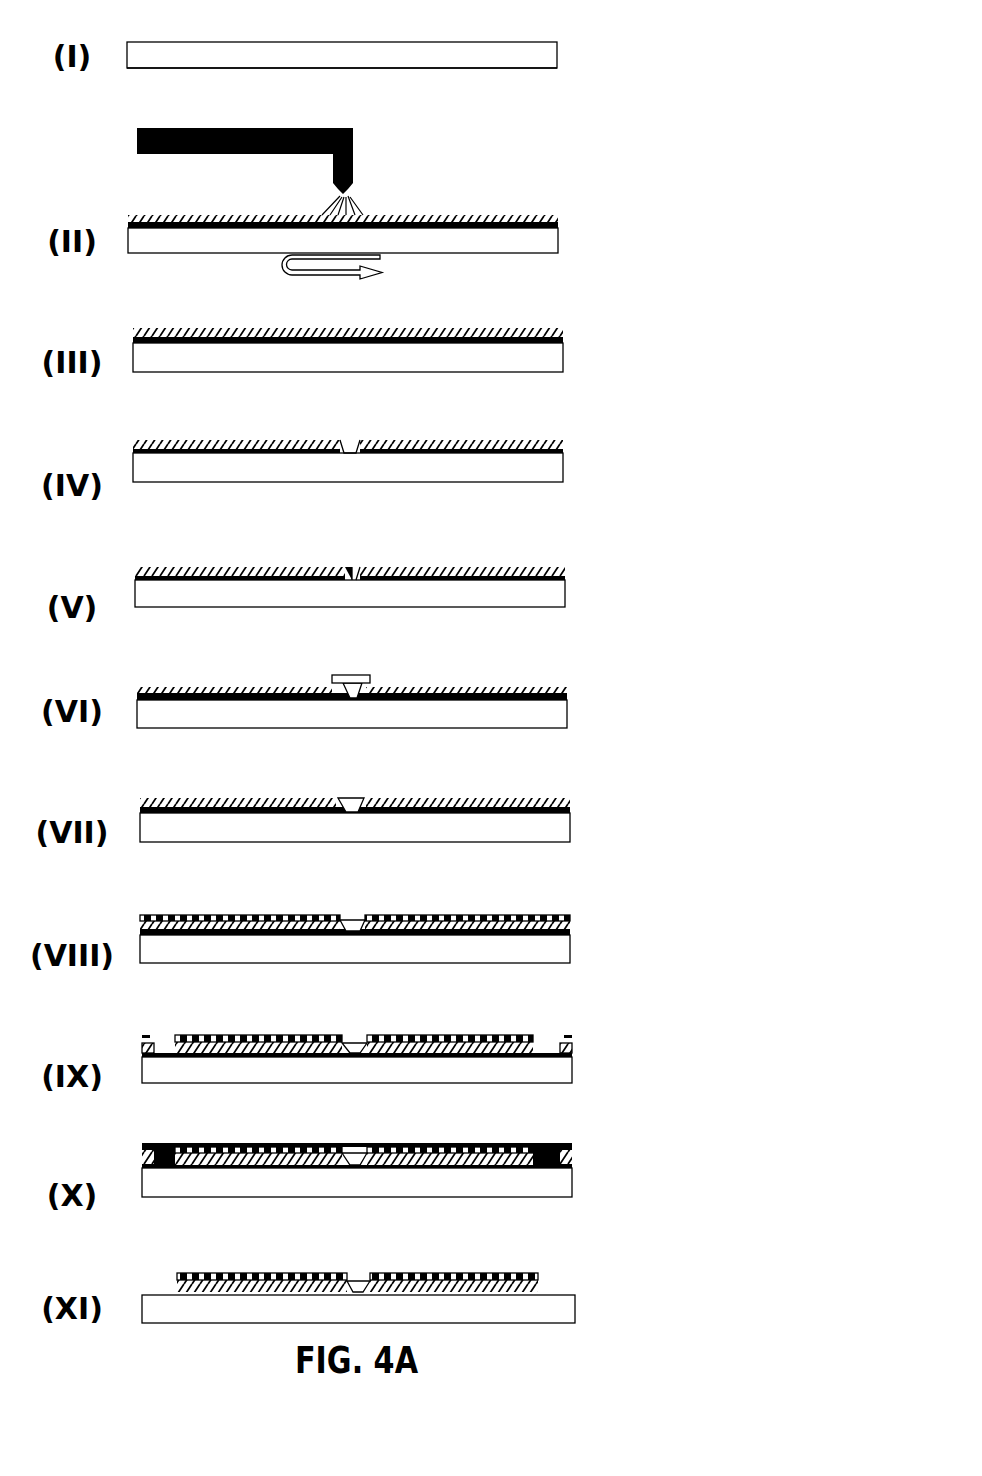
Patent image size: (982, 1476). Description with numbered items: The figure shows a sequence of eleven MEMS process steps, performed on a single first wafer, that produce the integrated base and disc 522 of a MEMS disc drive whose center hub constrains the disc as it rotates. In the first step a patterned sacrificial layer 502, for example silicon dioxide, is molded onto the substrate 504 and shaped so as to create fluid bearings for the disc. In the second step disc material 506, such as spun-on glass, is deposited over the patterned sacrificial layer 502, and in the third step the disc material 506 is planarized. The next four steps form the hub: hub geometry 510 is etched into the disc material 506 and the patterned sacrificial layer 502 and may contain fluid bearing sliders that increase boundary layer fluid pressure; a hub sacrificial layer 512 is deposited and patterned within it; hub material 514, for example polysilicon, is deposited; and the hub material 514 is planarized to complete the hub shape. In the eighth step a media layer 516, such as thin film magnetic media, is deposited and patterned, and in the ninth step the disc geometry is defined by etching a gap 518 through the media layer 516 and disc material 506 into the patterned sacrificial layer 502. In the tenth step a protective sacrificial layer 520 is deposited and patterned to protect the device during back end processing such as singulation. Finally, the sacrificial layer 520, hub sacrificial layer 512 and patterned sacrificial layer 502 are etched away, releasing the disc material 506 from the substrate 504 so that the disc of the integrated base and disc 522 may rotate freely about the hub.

The patterned sacrificial layer 502 is at (397, 40).
The substrate 504 is at (547, 60).
The disc material 506 is at (352, 212).
The hub geometry 510 is at (348, 448).
The hub sacrificial layer 512 is at (352, 577).
The hub material 514 is at (356, 676).
The media layer 516 is at (420, 915).
The gap 518 is at (548, 1035).
The sacrificial layer 520 is at (545, 1143).
The integrated base and disc 522 is at (597, 1279).